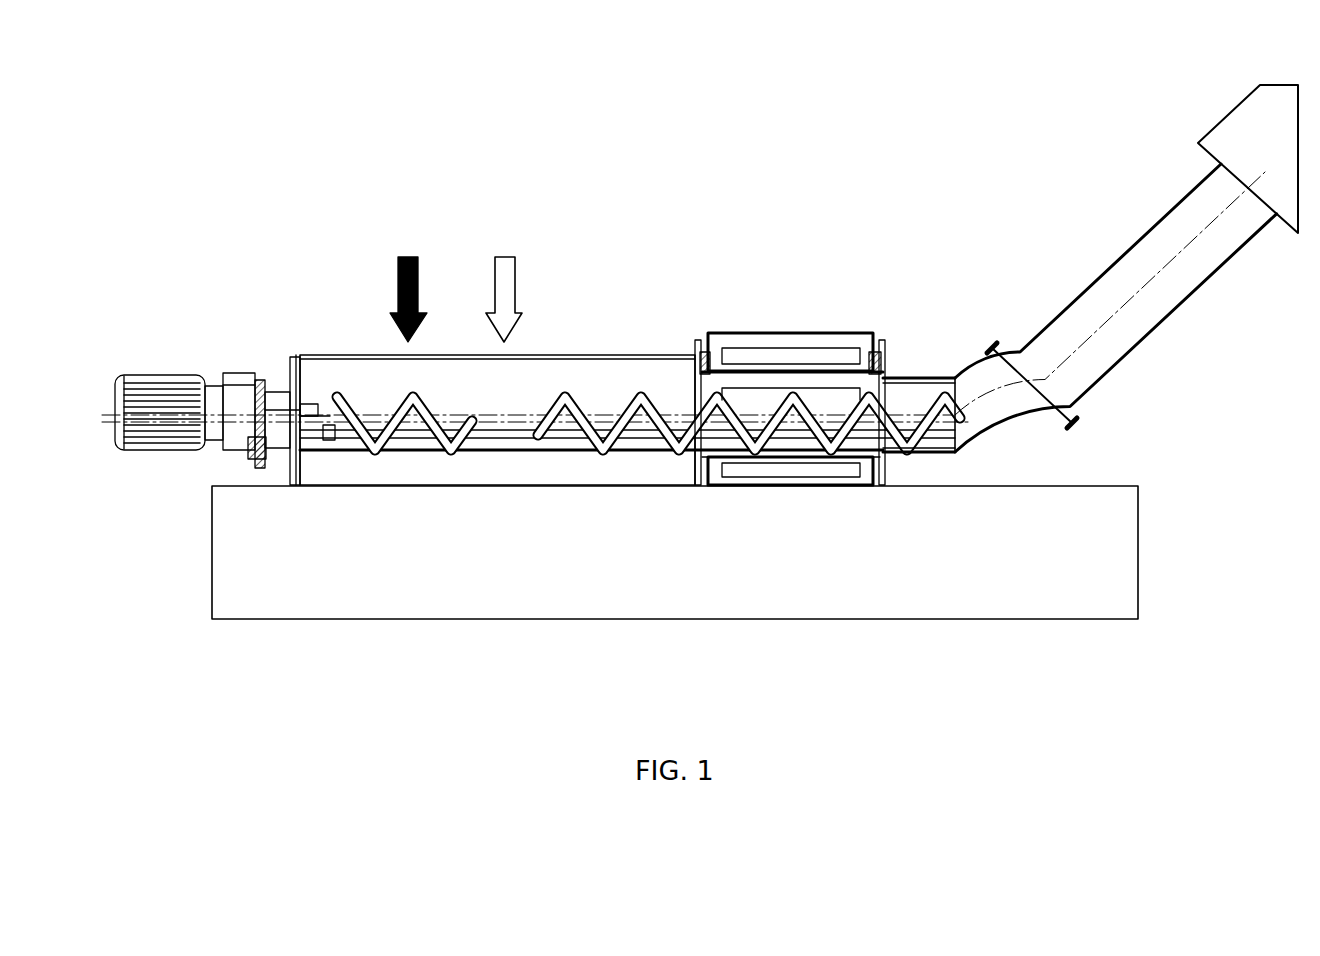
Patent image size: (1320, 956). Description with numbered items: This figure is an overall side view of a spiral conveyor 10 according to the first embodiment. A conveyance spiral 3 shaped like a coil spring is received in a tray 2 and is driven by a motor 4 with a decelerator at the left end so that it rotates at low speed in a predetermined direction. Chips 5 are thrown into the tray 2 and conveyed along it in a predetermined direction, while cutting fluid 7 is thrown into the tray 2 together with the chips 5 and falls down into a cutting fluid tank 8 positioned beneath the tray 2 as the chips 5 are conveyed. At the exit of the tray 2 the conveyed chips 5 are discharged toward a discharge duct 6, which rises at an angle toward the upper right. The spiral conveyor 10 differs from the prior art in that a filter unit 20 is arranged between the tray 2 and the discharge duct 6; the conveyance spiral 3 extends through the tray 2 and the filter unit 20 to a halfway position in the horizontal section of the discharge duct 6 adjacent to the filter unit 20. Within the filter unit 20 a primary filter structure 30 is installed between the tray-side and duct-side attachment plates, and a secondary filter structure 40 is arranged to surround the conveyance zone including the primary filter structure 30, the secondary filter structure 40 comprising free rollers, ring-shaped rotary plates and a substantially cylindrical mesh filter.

The spiral conveyor 10 is at (186, 290).
The tray 2 is at (485, 455).
The conveyance spiral 3 is at (562, 400).
The motor 4 is at (157, 387).
The chips 5 is at (397, 280).
The cutting fluid 7 is at (518, 280).
The discharge duct 6 is at (1165, 199).
The cutting fluid tank 8 is at (742, 622).
The filter unit 20 is at (811, 367).
The primary filter structure 30 is at (845, 393).
The secondary filter structure 40 is at (833, 346).